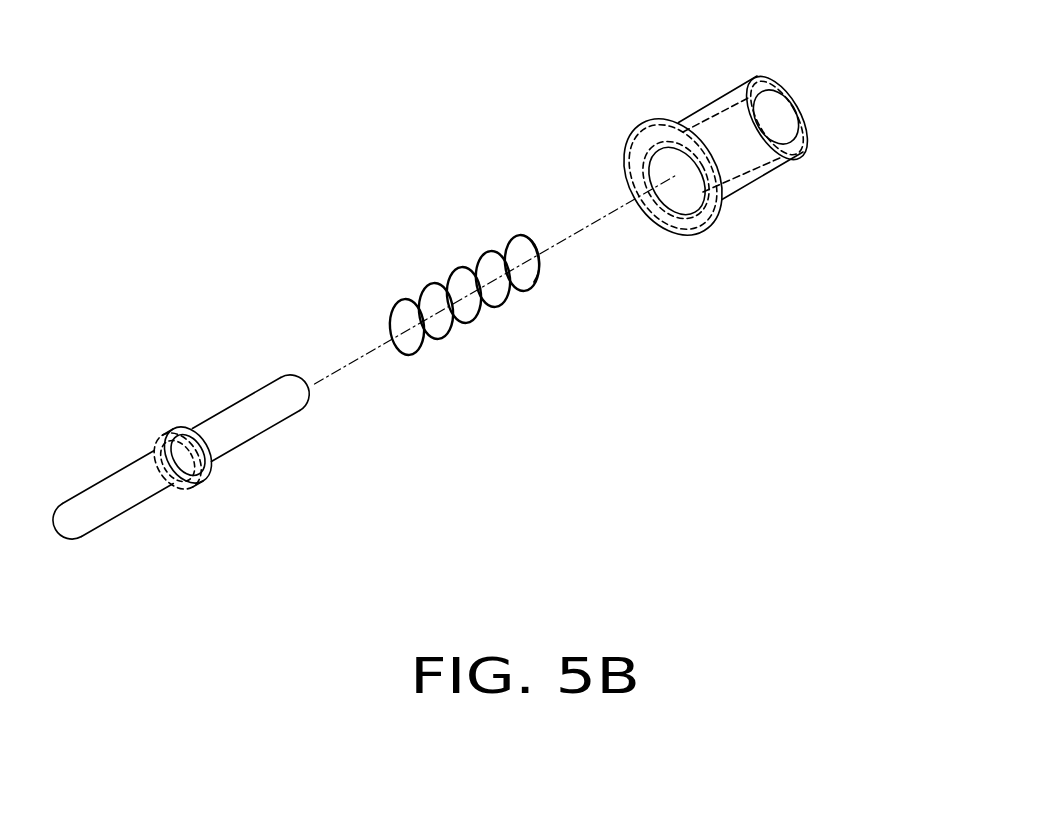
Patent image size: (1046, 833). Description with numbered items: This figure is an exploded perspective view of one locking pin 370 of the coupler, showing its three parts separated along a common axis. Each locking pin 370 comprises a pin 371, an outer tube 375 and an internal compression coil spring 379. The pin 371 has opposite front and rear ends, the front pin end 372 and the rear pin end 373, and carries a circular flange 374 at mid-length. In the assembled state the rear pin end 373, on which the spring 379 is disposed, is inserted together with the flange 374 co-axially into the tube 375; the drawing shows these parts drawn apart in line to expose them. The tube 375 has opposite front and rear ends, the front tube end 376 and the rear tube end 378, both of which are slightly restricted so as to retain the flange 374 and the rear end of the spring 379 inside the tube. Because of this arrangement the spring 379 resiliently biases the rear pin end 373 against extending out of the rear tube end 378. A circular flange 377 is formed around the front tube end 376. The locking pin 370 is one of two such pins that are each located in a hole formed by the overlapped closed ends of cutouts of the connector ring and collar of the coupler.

The locking pin 370 is at (297, 141).
The pin 371 is at (222, 530).
The front pin end 372 is at (108, 476).
The rear pin end 373 is at (260, 396).
The circular flange 374 is at (175, 427).
The outer tube 375 is at (773, 230).
The front tube end 376 is at (647, 172).
The circular flange 377 is at (648, 119).
The rear tube end 378 is at (800, 100).
The internal compression coil spring 379 is at (501, 350).